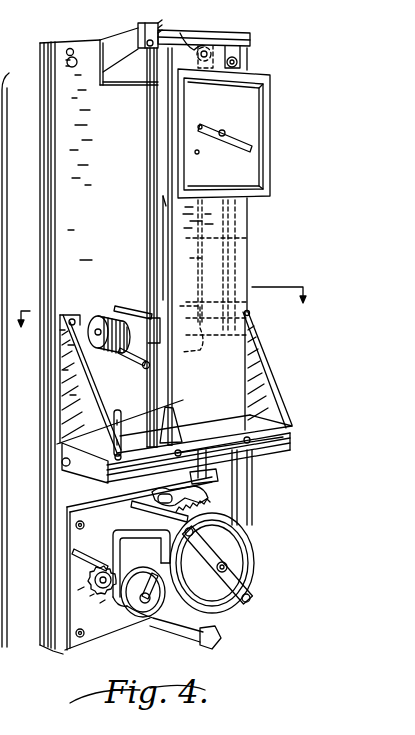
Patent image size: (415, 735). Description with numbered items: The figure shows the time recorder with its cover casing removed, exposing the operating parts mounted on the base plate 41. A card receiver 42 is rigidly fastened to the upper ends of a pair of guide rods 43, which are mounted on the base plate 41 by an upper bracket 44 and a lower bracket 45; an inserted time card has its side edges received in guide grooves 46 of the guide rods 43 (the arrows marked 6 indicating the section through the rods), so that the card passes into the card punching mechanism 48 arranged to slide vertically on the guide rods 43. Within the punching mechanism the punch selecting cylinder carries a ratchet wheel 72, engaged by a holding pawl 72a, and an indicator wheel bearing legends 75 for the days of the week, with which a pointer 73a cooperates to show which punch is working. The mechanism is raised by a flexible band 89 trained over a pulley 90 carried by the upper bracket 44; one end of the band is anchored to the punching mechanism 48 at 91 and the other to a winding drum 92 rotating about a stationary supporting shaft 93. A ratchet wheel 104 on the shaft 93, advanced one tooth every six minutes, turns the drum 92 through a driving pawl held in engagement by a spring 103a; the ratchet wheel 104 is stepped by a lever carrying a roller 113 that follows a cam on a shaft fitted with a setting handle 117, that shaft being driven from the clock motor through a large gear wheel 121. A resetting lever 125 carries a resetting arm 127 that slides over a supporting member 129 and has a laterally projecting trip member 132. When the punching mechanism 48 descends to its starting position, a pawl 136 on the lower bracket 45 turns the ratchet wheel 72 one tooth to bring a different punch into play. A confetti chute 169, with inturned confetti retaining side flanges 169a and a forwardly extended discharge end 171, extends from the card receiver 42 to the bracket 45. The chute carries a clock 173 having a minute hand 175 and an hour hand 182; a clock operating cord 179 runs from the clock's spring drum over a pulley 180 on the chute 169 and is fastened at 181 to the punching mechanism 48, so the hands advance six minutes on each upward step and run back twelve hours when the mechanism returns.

The section line 6- 6 is at (163, 294).
The base plate 41 is at (40, 280).
The card receiver 42 is at (251, 37).
The guide rods 43 is at (147, 252).
The upper bracket 44 is at (113, 45).
The lower bracket 45 is at (108, 450).
The guide grooves 46 is at (252, 336).
The card punching mechanism 48 is at (138, 305).
The ratchet wheel 72 is at (135, 360).
The holding pawl 72a is at (130, 390).
The pointer 73a is at (116, 309).
The legend 75 is at (108, 350).
The flexible band 89 is at (252, 450).
The pulley 90 is at (238, 62).
The band anchorage 91 is at (236, 302).
The winding drum 92 is at (253, 554).
The stationary supporting shaft 93 is at (230, 568).
The spring 103a is at (212, 513).
The ratchet wheel 104 is at (207, 505).
The roller 113 is at (113, 582).
The setting handle 117 is at (151, 603).
The gear wheel 121 is at (92, 588).
The resetting lever 125 is at (210, 486).
The resetting arm 127 is at (112, 485).
The supporting member 129 is at (140, 508).
The trip member 132 is at (200, 495).
The pawl 136 is at (150, 415).
The confetti chute 169 is at (172, 228).
The confetti retaining side flanges 169a is at (164, 198).
The discharge end 171 is at (230, 414).
The clock 173 is at (290, 121).
The minute hand 175 is at (253, 149).
The clock operating cord 179 is at (247, 238).
The pulley 180 is at (192, 46).
The cord fastening 181 is at (182, 352).
The hour hand 182 is at (200, 127).